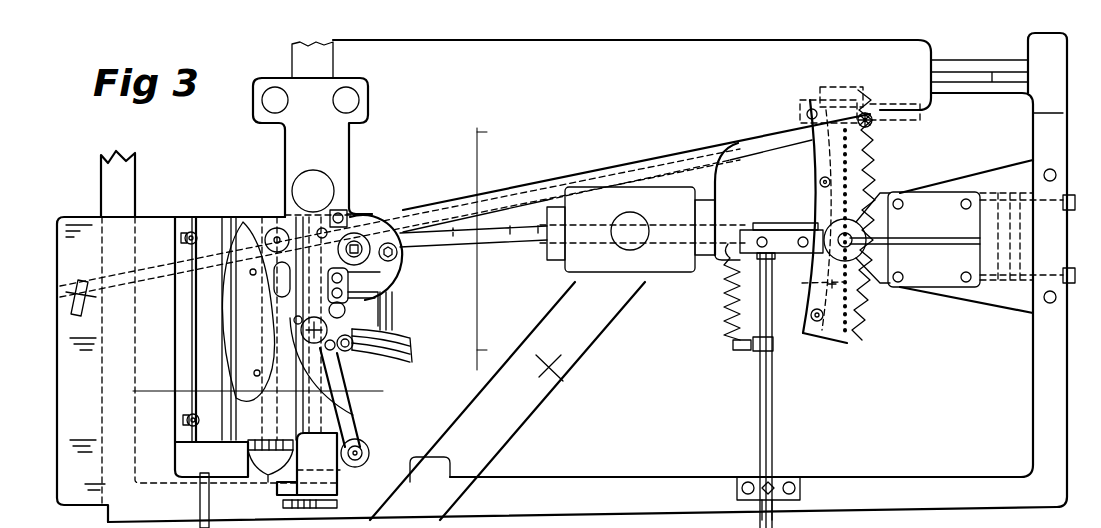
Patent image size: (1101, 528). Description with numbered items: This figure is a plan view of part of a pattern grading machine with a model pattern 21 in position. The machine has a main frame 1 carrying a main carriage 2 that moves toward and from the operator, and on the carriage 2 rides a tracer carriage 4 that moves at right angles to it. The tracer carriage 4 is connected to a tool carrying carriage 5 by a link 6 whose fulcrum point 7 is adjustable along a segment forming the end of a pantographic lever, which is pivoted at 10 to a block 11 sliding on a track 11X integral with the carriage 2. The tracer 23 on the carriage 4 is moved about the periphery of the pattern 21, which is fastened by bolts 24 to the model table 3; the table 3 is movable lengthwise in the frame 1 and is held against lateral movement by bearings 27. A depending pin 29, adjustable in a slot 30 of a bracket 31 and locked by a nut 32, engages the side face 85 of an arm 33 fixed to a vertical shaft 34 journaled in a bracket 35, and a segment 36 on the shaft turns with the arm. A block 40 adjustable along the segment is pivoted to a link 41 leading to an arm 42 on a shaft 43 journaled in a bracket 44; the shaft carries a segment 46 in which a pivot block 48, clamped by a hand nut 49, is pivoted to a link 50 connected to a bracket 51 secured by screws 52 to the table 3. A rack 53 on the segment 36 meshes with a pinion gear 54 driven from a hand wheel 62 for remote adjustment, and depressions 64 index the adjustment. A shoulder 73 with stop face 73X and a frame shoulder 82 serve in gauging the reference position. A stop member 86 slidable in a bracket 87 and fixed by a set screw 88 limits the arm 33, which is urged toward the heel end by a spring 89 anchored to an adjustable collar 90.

The main frame 1 is at (1001, 87).
The main carriage 2 is at (913, 50).
The model table 3 is at (215, 230).
The tracer carriage 4 is at (297, 153).
The tool carrying carriage 5 is at (486, 248).
The link 6 is at (257, 392).
The fulcrum point 7 is at (778, 243).
The pivotal connection 10 is at (633, 235).
The block 11 is at (658, 200).
The track 11X is at (703, 210).
The model pattern 21 is at (243, 287).
The tracer 23 is at (277, 295).
The bolts 24 is at (251, 271).
The bearings 27 is at (184, 234).
The depending pin 29 is at (398, 255).
The slot 30 is at (402, 232).
The bracket 31 is at (387, 298).
The nut 32 is at (403, 267).
The arm 33 is at (531, 237).
The vertical shaft 34 is at (872, 280).
The bracket 35 is at (970, 182).
The segment 36 is at (843, 345).
The block 40 is at (656, 523).
The link 41 is at (515, 190).
The arm 42 is at (388, 312).
The shaft 43 is at (413, 350).
The bracket 44 is at (387, 357).
The segment 46 is at (383, 358).
The pivot block 48 is at (340, 356).
The hand nut 49 is at (440, 312).
The link 50 is at (350, 432).
The bracket 51 is at (260, 458).
The screws 52 is at (273, 468).
The rack 53 is at (864, 327).
The pinion gear 54 is at (866, 112).
The hand wheel 62 is at (60, 298).
The depressions 64 is at (809, 284).
The shoulder 73 is at (302, 322).
The stop face 73X is at (343, 390).
The shoulder 82 is at (220, 507).
The side face 85 is at (358, 243).
The stop member 86 is at (760, 412).
The bracket 87 is at (795, 480).
The set screw 88 is at (767, 493).
The spring 89 is at (740, 315).
The adjustable collar 90 is at (753, 348).